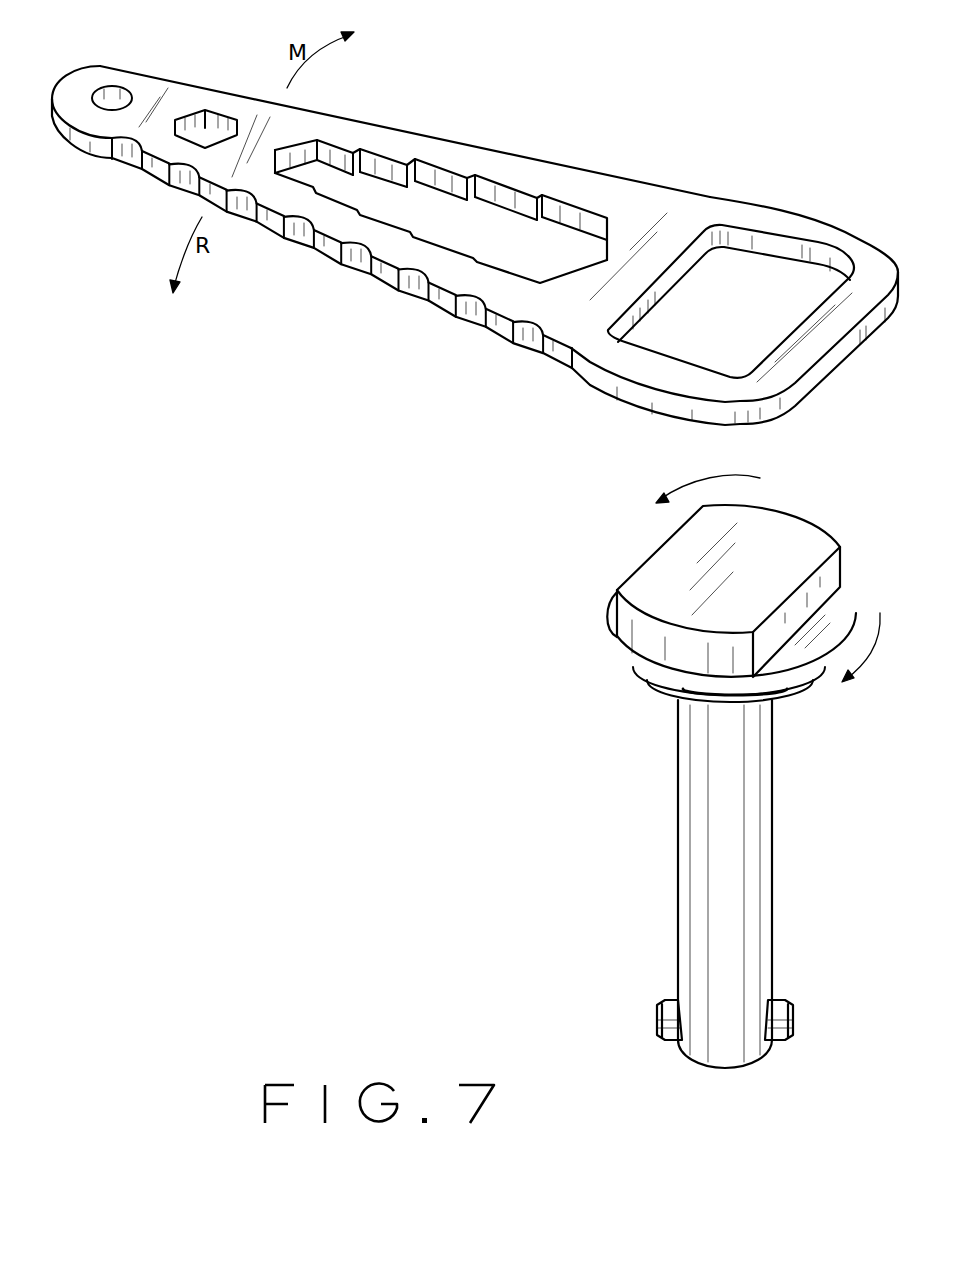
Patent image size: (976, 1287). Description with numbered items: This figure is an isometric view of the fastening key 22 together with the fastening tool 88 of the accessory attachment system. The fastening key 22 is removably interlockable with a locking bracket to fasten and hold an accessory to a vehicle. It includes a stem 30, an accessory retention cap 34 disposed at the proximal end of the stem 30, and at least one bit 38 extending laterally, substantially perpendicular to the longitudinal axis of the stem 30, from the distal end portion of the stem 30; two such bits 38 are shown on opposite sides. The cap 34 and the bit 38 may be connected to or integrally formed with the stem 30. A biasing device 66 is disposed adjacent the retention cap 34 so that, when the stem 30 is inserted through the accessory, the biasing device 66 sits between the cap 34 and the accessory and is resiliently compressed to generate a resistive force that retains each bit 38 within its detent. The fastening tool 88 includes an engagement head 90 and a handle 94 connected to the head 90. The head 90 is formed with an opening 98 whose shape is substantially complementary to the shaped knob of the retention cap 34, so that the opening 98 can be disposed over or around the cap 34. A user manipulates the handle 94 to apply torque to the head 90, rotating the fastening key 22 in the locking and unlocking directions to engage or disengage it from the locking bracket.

The fastening tool 88 is at (650, 141).
The handle 94 is at (388, 147).
The opening 98 is at (718, 293).
The engagement head 90 is at (818, 230).
The fastening key 22 is at (613, 780).
The accessory retention cap 34 is at (760, 543).
The biasing device 66 is at (785, 685).
The stem 30 is at (752, 832).
The bit 38 is at (670, 1018).